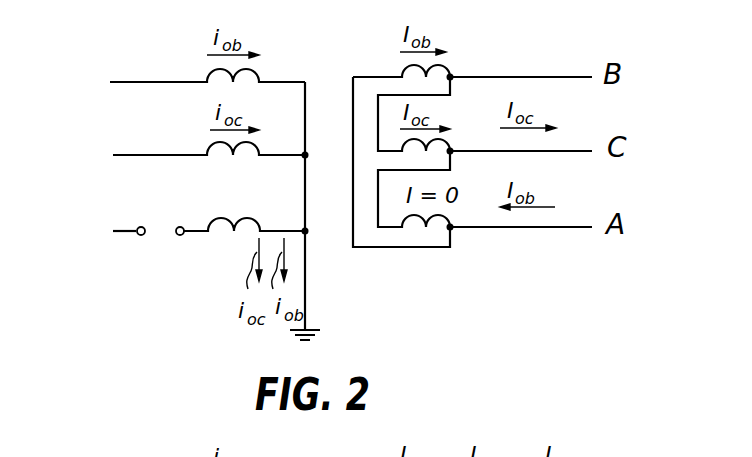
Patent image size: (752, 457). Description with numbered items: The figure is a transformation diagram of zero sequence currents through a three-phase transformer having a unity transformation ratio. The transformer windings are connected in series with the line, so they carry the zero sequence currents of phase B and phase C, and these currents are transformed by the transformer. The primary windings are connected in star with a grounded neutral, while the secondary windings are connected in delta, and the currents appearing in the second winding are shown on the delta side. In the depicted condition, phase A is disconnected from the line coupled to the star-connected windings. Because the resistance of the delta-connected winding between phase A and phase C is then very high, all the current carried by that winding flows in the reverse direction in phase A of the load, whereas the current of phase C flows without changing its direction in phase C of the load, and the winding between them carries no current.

The phase A is at (193, 236).
The phase B is at (190, 79).
The phase C is at (196, 157).